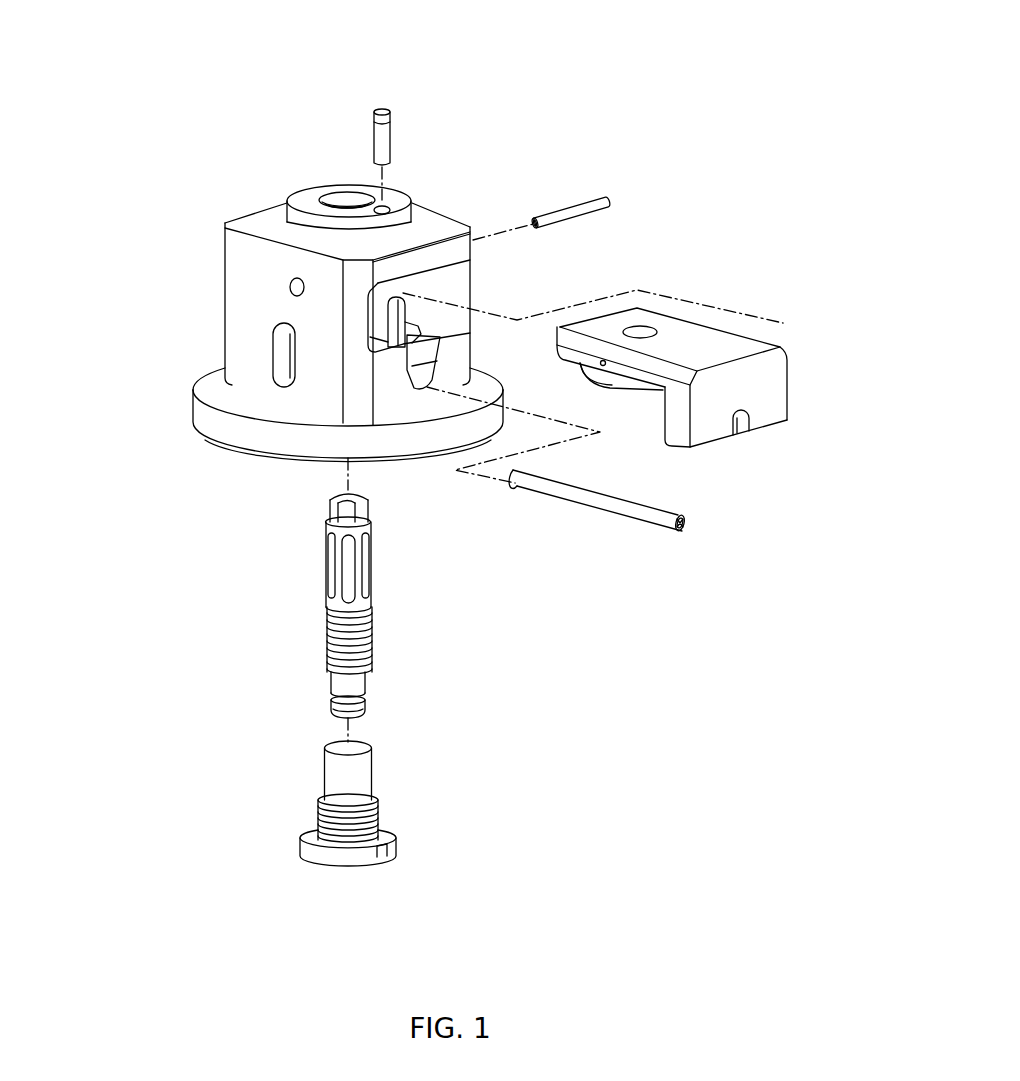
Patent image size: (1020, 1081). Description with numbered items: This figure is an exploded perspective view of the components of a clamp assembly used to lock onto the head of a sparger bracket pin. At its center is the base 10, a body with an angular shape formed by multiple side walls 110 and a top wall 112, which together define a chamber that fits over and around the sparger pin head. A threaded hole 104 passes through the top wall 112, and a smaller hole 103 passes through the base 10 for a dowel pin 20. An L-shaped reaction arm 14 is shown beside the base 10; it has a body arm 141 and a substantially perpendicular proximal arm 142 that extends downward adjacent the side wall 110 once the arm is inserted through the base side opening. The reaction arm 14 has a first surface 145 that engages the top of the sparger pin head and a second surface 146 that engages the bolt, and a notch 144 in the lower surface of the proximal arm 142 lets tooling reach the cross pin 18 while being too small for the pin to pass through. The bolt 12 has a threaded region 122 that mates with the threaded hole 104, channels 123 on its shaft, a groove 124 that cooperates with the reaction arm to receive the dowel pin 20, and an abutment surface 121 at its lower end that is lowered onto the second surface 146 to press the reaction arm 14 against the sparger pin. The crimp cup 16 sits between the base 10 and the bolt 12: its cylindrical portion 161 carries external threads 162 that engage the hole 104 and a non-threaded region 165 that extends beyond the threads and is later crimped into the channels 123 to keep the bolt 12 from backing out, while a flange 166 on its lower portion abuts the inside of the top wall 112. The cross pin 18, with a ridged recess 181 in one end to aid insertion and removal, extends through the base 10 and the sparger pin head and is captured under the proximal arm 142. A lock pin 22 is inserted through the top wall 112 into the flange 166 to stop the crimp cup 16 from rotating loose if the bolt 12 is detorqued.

The base 10 is at (240, 207).
The bolt 12 is at (314, 548).
The reaction arm 14 is at (793, 380).
The crimp cup 16 is at (432, 820).
The cross pin 18 is at (585, 513).
The dowel pin 20 is at (603, 203).
The lock pin 22 is at (383, 133).
The hole 103 is at (290, 290).
The hole 104 is at (345, 197).
The side wall 110 is at (242, 335).
The top wall 112 is at (440, 223).
The abutment surface 121 is at (353, 716).
The threaded region 122 is at (336, 638).
The channels 123 is at (366, 559).
The groove 124 is at (333, 698).
The arm 141 is at (752, 347).
The proximal arm 142 is at (713, 433).
The notch 144 is at (737, 430).
The first surface 145 is at (620, 383).
The second surface 146 is at (640, 332).
The cylindrical portion 161 is at (336, 787).
The external threads 162 is at (320, 818).
The non-threaded region 165 is at (333, 763).
The flange 166 is at (327, 857).
The ridged recess 181 is at (688, 532).